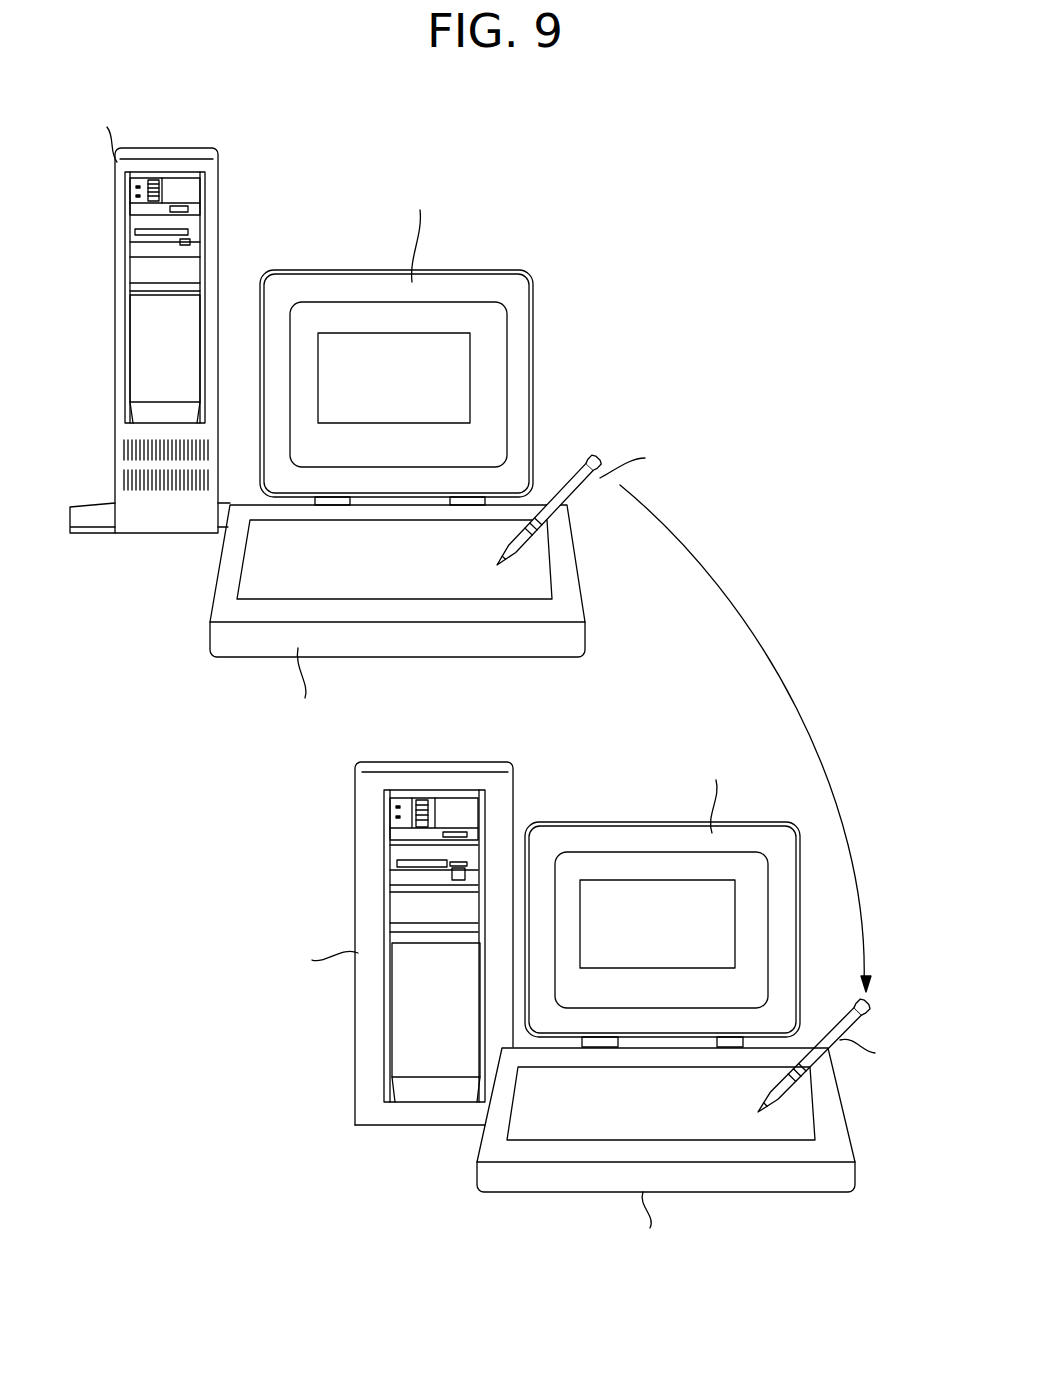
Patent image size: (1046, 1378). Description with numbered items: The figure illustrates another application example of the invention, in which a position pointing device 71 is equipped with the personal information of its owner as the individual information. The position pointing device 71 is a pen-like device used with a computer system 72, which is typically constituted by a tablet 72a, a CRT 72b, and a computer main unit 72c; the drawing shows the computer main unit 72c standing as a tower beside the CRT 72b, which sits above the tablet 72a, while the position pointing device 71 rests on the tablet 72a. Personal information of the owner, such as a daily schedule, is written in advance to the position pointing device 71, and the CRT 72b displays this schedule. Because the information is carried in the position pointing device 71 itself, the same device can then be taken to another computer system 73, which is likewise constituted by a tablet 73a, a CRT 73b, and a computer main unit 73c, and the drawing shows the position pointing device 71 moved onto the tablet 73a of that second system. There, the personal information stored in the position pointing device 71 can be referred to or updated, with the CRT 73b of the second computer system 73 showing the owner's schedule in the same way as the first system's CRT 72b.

The position pointing device 71 is at (606, 452).
The computer system 72 is at (598, 258).
The tablet 72a is at (254, 658).
The CRT 72b is at (430, 275).
The computer main unit 72c is at (218, 212).
The another computer system 73 is at (382, 1152).
The tablet 73a is at (603, 1192).
The CRT 73b is at (665, 822).
The computer main unit 73c is at (355, 920).